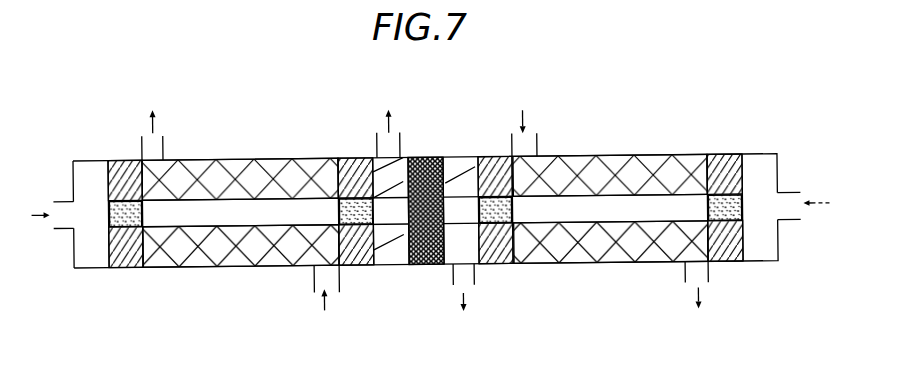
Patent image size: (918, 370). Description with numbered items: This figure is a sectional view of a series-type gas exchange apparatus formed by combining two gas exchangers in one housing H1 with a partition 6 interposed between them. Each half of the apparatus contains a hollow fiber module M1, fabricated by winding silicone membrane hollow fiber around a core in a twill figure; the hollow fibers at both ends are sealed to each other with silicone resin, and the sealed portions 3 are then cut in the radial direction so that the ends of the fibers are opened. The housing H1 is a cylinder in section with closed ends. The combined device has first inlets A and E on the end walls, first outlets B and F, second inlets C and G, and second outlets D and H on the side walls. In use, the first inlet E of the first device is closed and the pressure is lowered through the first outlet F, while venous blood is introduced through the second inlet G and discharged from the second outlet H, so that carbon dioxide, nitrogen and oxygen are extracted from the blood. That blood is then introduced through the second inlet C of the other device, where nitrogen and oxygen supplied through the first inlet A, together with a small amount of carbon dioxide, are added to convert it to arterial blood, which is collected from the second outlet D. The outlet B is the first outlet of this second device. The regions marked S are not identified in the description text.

The hollow fiber module M1 is at (105, 183).
The first inlet A is at (57, 200).
The first inlet E is at (787, 200).
The sealed portions 3 is at (127, 268).
The sealing member S is at (108, 223).
The partition 6 is at (425, 269).
The housing H1 is at (596, 274).
The second outlet D is at (163, 138).
The first outlet B is at (377, 153).
The second inlet G is at (537, 138).
The second inlet C is at (313, 280).
The first outlet F is at (473, 289).
The second outlet H is at (683, 270).